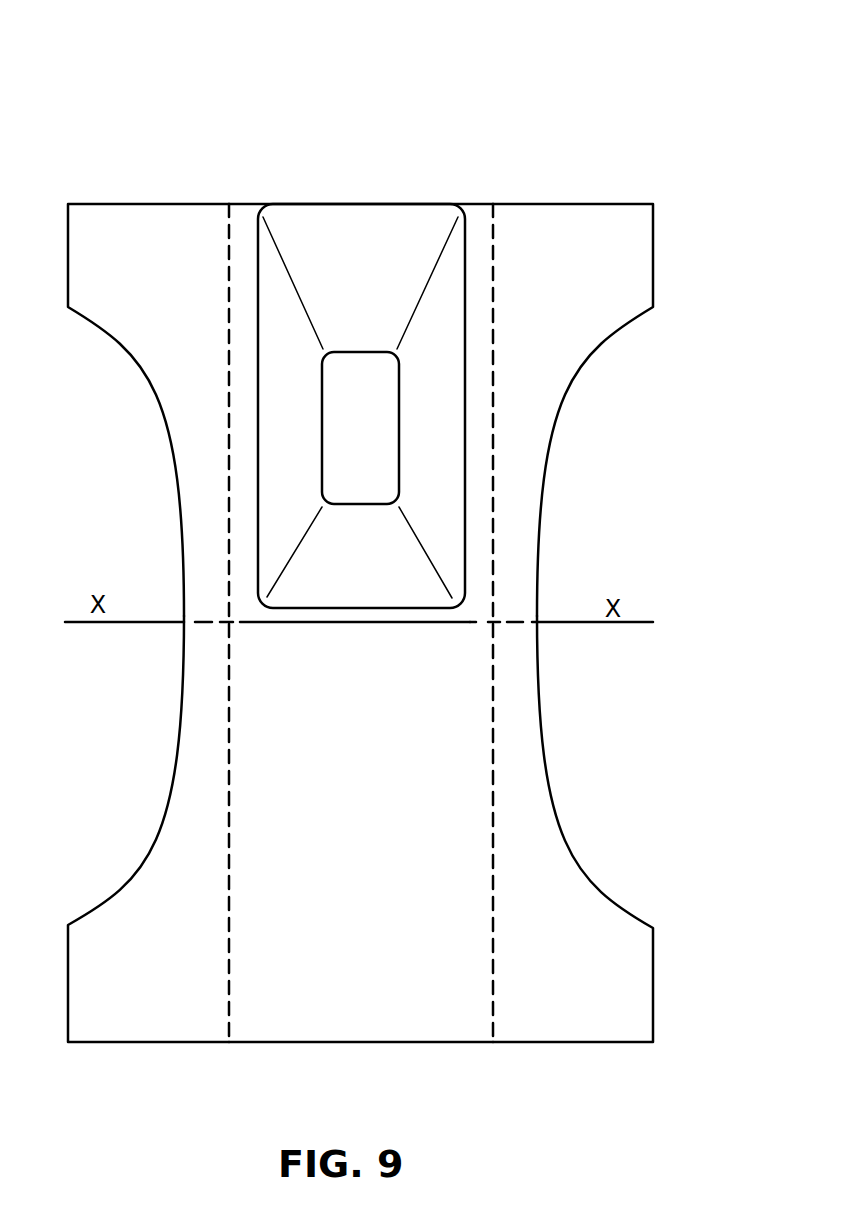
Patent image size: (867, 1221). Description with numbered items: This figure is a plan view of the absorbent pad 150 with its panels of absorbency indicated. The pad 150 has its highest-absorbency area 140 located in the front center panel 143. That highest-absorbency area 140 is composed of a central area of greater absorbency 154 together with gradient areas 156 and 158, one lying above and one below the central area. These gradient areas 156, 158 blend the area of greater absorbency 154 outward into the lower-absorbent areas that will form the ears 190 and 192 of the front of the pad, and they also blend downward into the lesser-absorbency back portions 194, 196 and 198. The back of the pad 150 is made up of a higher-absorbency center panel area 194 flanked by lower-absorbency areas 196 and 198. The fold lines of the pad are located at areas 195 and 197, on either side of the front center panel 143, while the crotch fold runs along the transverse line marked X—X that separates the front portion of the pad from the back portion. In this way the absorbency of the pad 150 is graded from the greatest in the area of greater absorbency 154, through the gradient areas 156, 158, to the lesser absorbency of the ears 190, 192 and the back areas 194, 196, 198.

The absorbent pad 150 is at (368, 103).
The front center panel 143 is at (253, 221).
The highest-absorbency area 140 is at (452, 297).
The gradient area 156 is at (347, 290).
The area of greater absorbency 154 is at (336, 447).
The gradient area 158 is at (387, 565).
The ear 190 is at (118, 283).
The ear 192 is at (572, 292).
The back center panel area 194 is at (340, 777).
The fold line area 195 is at (227, 587).
The lower absorbency area 196 is at (125, 975).
The fold line area 197 is at (495, 587).
The lower absorbency area 198 is at (561, 983).